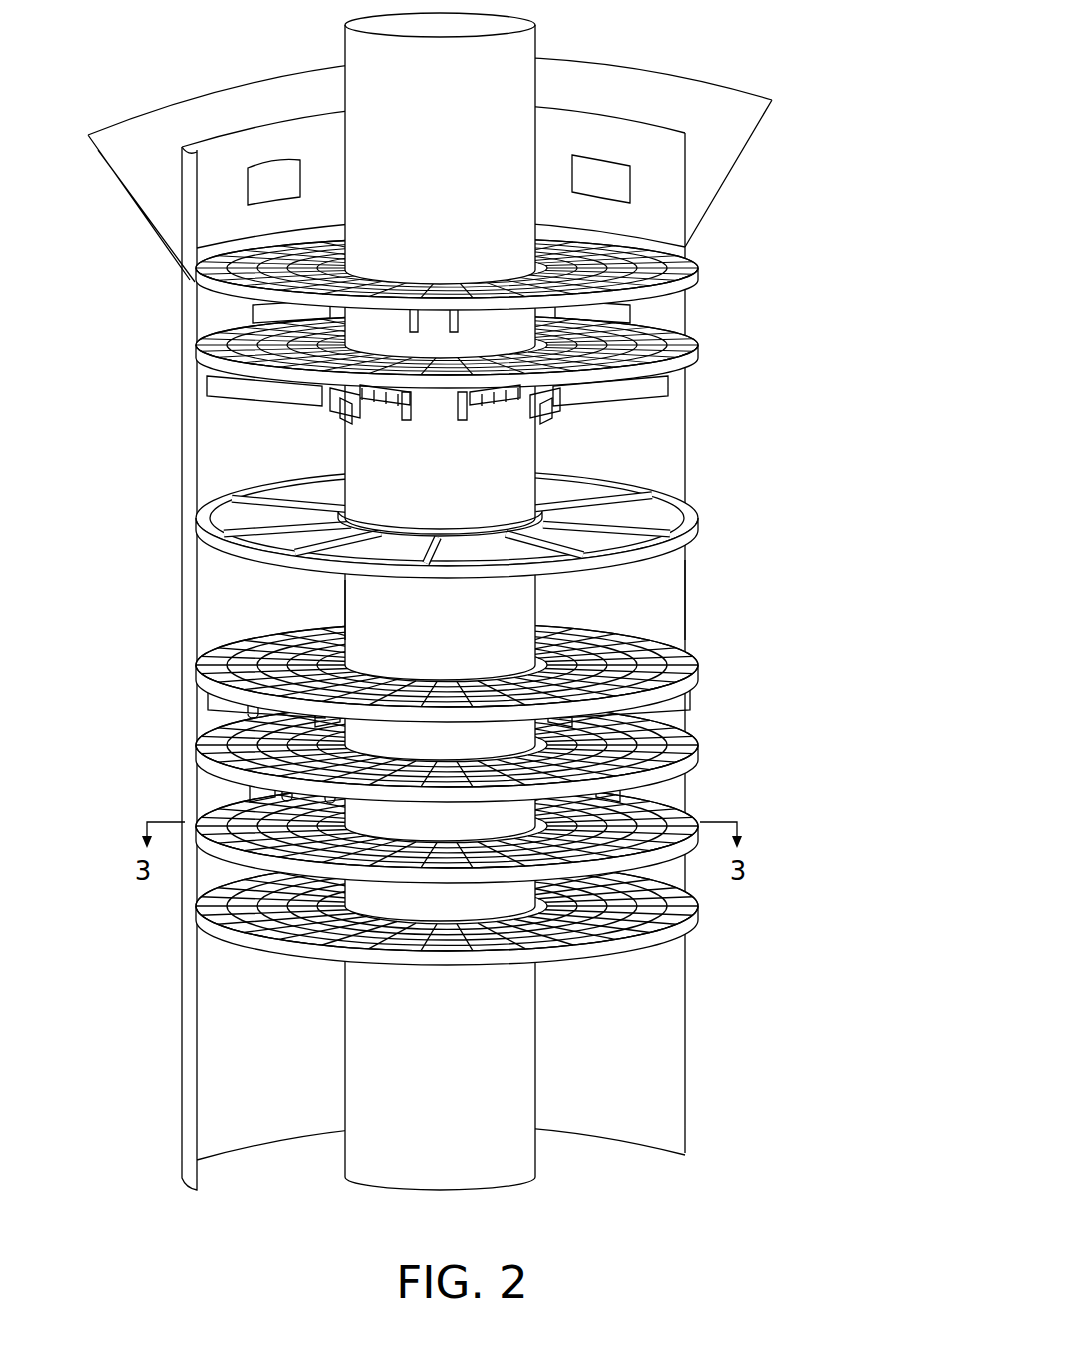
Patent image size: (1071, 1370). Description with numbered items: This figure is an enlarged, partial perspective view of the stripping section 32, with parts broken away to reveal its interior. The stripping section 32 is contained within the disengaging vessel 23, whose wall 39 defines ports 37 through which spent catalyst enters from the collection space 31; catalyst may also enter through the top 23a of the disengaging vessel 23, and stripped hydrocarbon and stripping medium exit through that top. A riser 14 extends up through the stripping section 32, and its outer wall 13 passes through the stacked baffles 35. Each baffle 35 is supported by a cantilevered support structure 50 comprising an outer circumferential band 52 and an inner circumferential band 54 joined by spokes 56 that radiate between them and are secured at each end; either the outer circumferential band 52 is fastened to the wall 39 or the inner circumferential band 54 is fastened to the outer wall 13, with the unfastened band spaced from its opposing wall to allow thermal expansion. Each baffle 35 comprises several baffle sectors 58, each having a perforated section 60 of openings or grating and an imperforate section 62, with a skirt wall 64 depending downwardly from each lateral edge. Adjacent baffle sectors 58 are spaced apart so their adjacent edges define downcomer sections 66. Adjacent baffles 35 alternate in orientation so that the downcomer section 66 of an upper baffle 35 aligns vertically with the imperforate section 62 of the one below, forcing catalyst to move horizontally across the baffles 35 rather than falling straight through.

The outer wall of the riser 13 is at (427, 646).
The riser 14 is at (330, 600).
The disengaging vessel 23 is at (180, 662).
The top of the disengaging vessel 23a is at (573, 130).
The collection space 31 is at (152, 158).
The stripping section 32 is at (828, 604).
The baffles 35 is at (690, 715).
The ports 37 is at (265, 183).
The wall of the disengaging vessel 39 is at (690, 588).
The cantilevered support structure 50 is at (433, 524).
The outer circumferential band 52 is at (668, 543).
The inner circumferential band 54 is at (470, 532).
The spokes 56 is at (663, 512).
The baffle sector 58 is at (235, 398).
The perforated section 60 is at (462, 400).
The imperforate section 62 is at (428, 400).
The skirt wall 64 is at (333, 402).
The downcomer section 66 is at (337, 415).